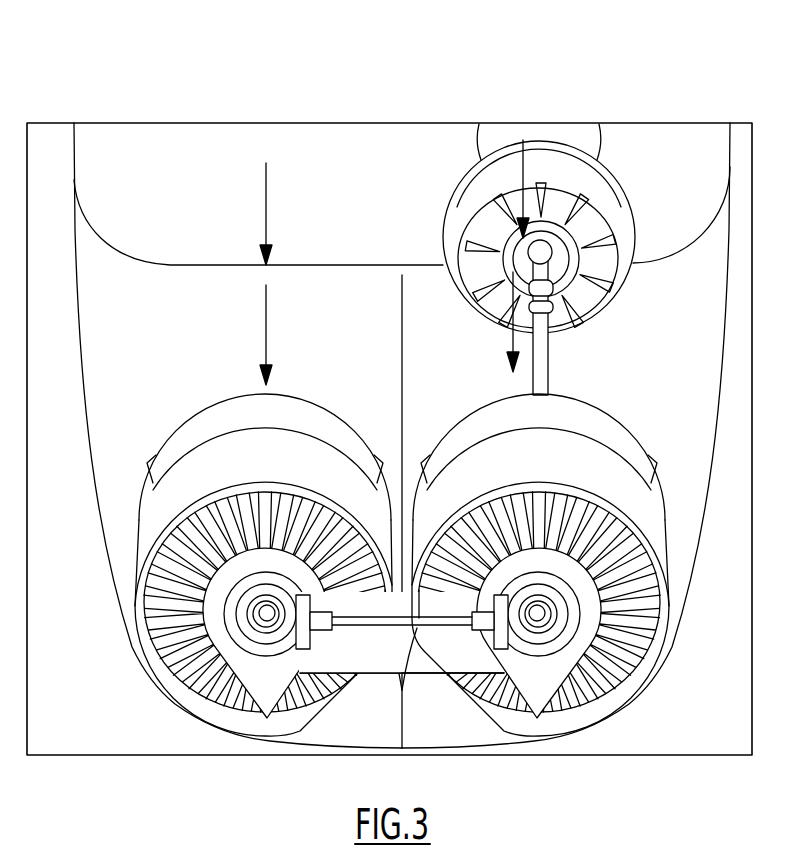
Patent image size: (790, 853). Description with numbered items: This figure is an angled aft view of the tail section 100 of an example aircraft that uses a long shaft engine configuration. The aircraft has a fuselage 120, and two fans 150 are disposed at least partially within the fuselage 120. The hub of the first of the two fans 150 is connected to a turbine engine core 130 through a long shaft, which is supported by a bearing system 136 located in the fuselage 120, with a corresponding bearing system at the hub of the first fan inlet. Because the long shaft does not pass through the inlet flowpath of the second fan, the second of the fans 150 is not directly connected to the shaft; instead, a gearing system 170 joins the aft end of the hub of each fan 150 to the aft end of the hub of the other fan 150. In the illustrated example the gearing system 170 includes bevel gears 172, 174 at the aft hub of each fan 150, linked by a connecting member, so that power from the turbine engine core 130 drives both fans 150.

The tail section 100 is at (315, 58).
The fuselage 120 is at (115, 143).
The turbine engine core 130 is at (575, 150).
The bearing system 136 is at (553, 308).
The fans 150 is at (198, 483).
The gearing system 170 is at (394, 692).
The bevel gear 172 is at (501, 649).
The bevel gear 174 is at (298, 650).